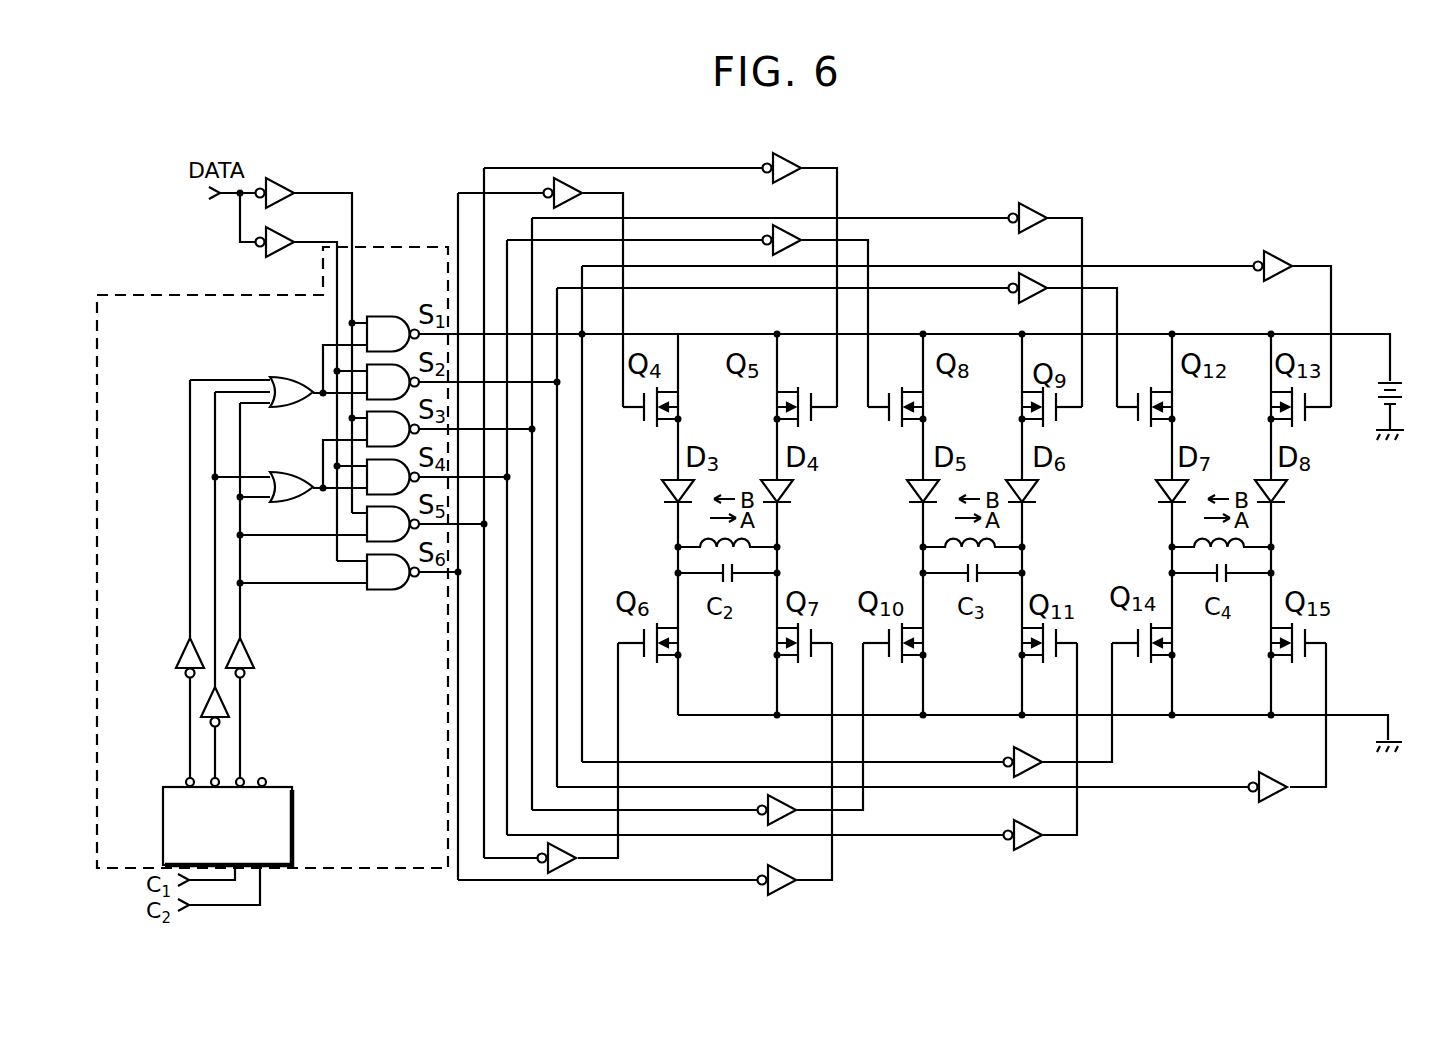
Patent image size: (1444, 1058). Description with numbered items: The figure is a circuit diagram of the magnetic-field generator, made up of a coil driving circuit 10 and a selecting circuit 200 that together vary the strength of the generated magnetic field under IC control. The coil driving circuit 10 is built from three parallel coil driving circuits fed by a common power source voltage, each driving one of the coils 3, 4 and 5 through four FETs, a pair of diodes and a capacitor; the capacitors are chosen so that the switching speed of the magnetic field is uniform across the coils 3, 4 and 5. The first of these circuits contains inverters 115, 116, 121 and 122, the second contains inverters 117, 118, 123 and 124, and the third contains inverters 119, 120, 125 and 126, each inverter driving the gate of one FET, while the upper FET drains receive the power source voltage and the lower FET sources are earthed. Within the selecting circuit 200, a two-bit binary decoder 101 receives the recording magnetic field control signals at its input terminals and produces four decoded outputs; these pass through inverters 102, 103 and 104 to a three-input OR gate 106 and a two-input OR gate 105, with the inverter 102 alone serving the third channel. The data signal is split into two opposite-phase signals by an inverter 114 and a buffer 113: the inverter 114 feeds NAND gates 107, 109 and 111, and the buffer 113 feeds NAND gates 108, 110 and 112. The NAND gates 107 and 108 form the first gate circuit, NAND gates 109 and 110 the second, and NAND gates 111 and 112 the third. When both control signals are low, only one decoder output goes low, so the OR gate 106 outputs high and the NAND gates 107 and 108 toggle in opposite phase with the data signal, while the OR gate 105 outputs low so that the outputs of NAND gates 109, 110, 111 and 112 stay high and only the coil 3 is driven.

The coil driving circuit 10 is at (1218, 167).
The selecting circuit 200 is at (185, 293).
The coil 3 is at (700, 542).
The coil 4 is at (948, 526).
The coil 5 is at (1197, 526).
The two-bit binary decoder 101 is at (300, 786).
The inverter 102 is at (253, 655).
The inverter 103 is at (206, 714).
The inverter 104 is at (185, 637).
The OR gate 105 is at (272, 485).
The OR gate 106 is at (270, 380).
The NAND gate 107 is at (397, 316).
The NAND gate 108 is at (370, 365).
The NAND gate 109 is at (370, 413).
The NAND gate 110 is at (370, 462).
The NAND gate 111 is at (370, 543).
The NAND gate 112 is at (370, 594).
The buffer 113 is at (293, 255).
The inverter 114 is at (290, 178).
The inverter 115 is at (572, 178).
The inverter 116 is at (800, 162).
The inverter 117 is at (800, 230).
The inverter 118 is at (1045, 205).
The inverter 119 is at (1050, 278).
The inverter 120 is at (1290, 258).
The inverter 121 is at (565, 875).
The inverter 122 is at (780, 895).
The inverter 123 is at (783, 825).
The inverter 124 is at (1028, 850).
The inverter 125 is at (1020, 777).
The inverter 126 is at (1280, 802).